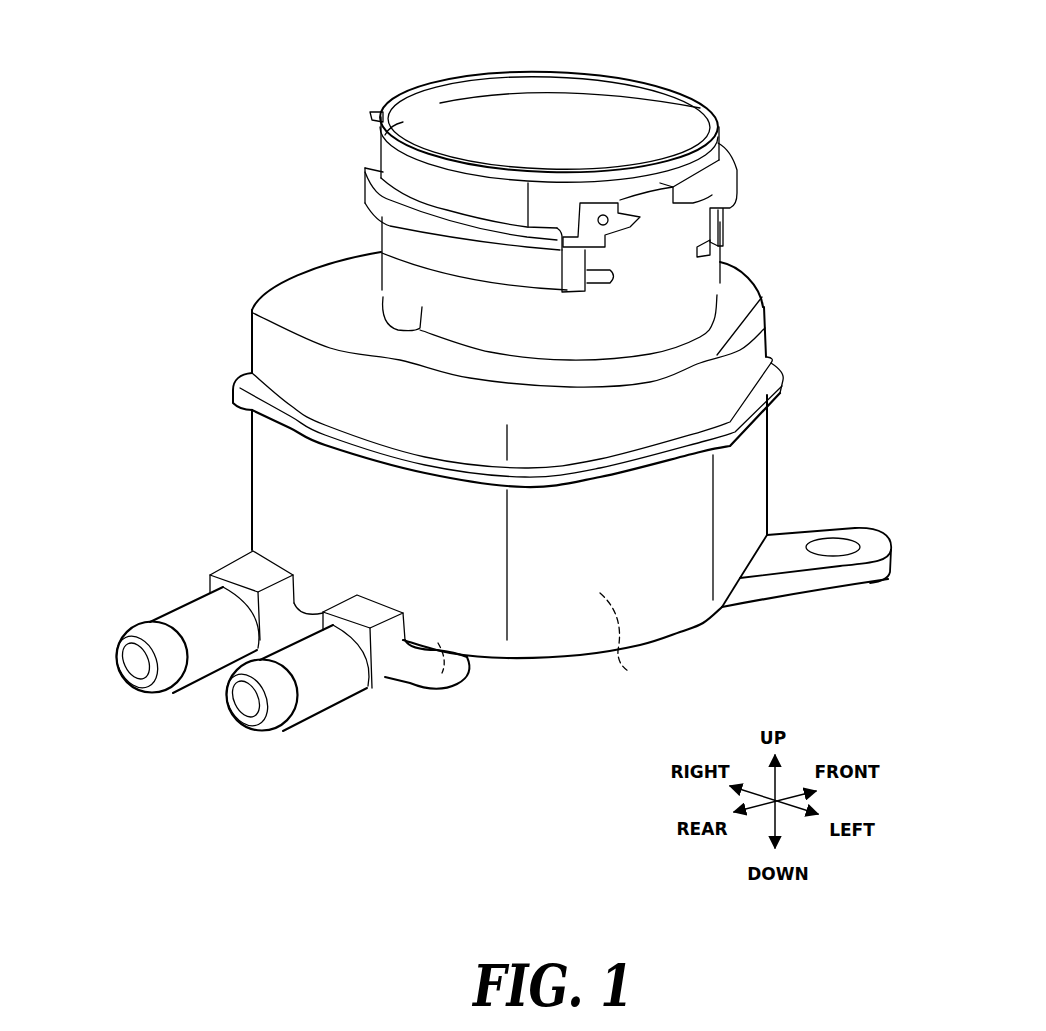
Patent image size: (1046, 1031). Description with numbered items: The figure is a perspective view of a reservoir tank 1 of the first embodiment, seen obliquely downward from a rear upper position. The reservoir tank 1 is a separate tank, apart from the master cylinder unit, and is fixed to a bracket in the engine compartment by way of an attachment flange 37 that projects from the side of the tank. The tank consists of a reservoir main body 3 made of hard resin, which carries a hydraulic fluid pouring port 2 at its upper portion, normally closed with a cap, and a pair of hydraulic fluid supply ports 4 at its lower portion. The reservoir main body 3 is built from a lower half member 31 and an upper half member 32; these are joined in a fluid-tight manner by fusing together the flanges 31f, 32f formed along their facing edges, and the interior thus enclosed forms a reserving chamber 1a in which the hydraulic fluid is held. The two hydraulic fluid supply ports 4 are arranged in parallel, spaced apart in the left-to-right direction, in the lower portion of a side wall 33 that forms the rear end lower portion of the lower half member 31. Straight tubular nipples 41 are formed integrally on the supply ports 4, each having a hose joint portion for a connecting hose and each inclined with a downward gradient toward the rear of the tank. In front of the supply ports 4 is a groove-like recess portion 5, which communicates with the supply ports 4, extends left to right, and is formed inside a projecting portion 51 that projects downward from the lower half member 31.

The reservoir tank 1 is at (297, 115).
The reserving chamber 1a is at (630, 645).
The hydraulic fluid pouring port 2 is at (703, 266).
The reservoir main body 3 is at (180, 296).
The lower half member 31 is at (258, 456).
The flange 31f is at (773, 397).
The upper half member 32 is at (256, 343).
The flange 32f is at (770, 360).
The side wall 33 is at (265, 497).
The attachment flange 37 is at (817, 527).
The hydraulic fluid supply port 4 is at (233, 562).
The nipple 41 is at (173, 620).
The recess portion 5 is at (438, 642).
The projecting portion 51 is at (425, 705).